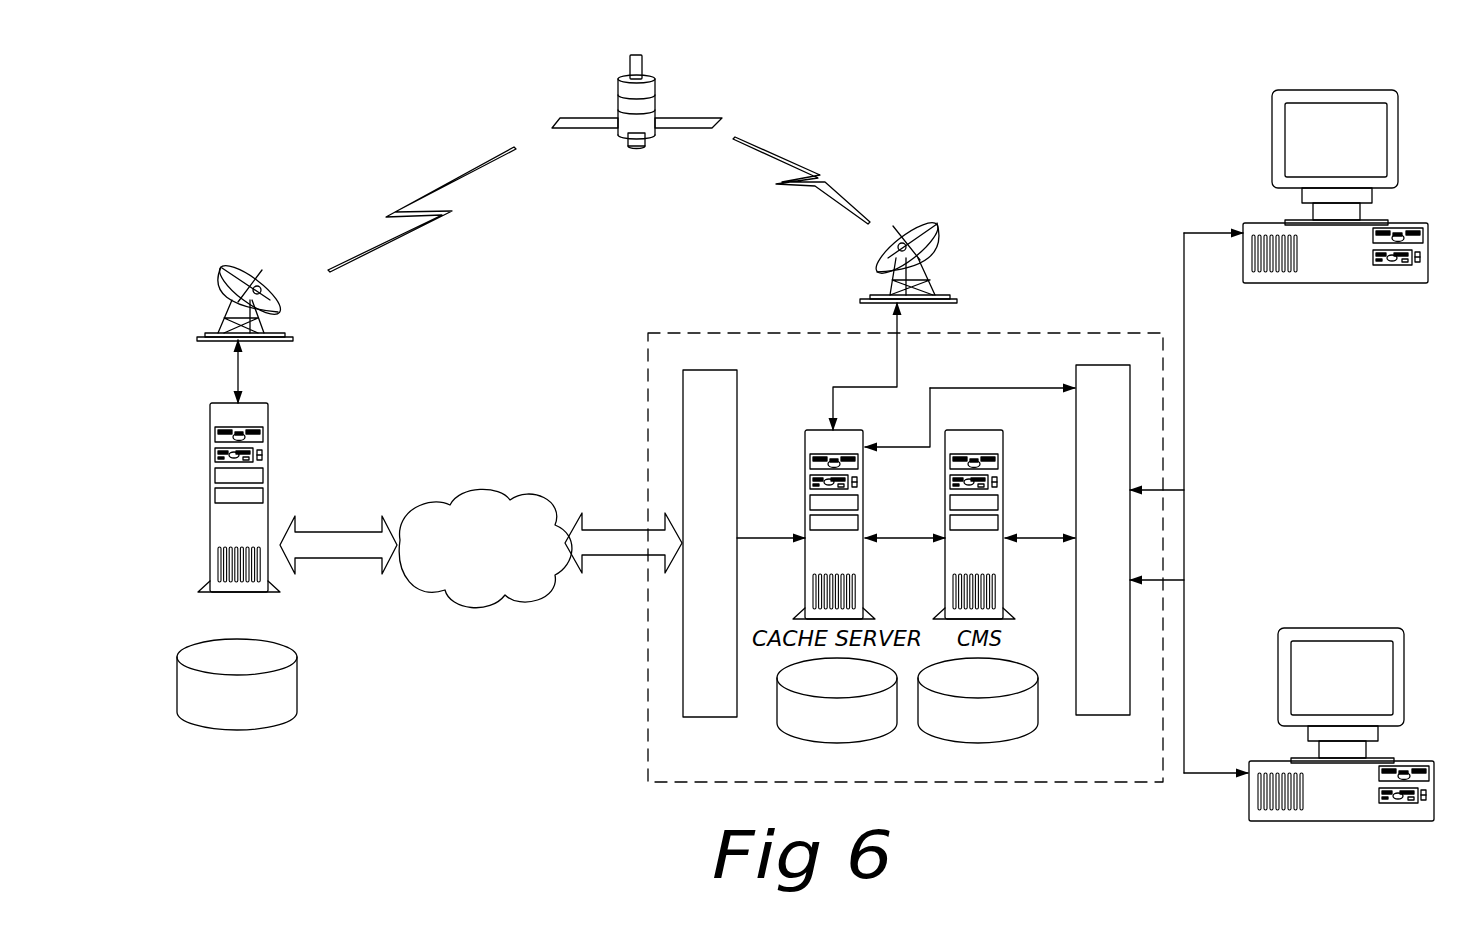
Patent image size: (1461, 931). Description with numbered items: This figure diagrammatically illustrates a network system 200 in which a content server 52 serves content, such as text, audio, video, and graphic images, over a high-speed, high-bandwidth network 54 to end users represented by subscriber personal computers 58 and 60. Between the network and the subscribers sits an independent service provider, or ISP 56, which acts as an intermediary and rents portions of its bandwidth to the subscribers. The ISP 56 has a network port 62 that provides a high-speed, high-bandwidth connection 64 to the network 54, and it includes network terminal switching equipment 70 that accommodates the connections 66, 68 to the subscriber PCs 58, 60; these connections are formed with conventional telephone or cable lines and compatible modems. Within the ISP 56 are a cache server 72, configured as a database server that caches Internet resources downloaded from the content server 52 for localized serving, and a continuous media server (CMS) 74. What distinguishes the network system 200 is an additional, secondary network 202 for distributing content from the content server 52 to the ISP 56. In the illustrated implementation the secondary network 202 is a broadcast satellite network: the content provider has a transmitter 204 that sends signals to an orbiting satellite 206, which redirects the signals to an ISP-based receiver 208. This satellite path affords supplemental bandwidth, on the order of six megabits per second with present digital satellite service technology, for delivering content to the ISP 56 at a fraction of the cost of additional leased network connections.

The network system 200 is at (336, 801).
The secondary network 202 is at (336, 142).
The transmitter 204 is at (293, 337).
The orbiting satellite 206 is at (632, 149).
The ISP-based receiver 208 is at (930, 224).
The content server 52 is at (187, 524).
The network 54 is at (537, 498).
The independent service provider (ISP) 56 is at (757, 338).
The subscriber personal computer 58 is at (1407, 223).
The subscriber personal computer 60 is at (1412, 763).
The network port 62 is at (702, 372).
The high-speed, high-bandwidth connection 64 is at (620, 540).
The connection 66 is at (1190, 233).
The connection 68 is at (1207, 773).
The network terminal switching equipment 70 is at (1100, 372).
The cache server 72 is at (753, 753).
The continuous media server (CMS) 74 is at (1028, 758).